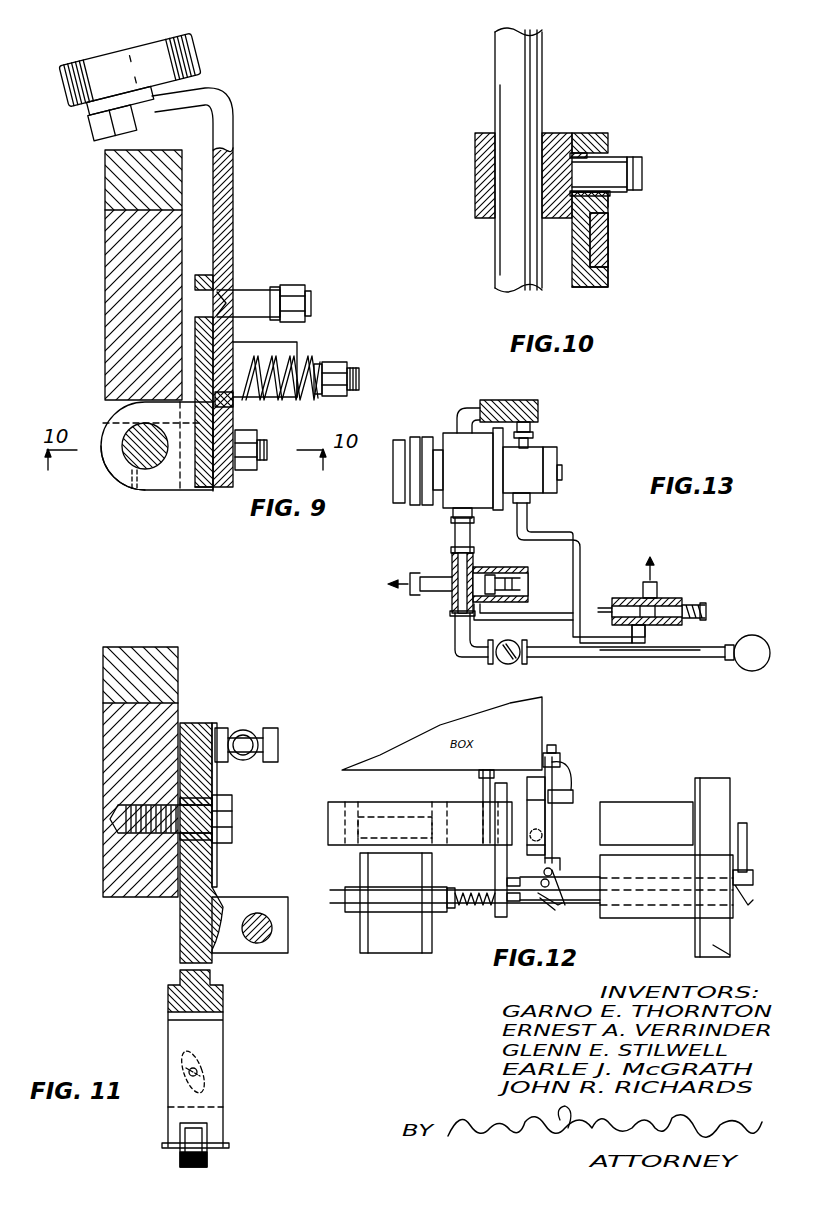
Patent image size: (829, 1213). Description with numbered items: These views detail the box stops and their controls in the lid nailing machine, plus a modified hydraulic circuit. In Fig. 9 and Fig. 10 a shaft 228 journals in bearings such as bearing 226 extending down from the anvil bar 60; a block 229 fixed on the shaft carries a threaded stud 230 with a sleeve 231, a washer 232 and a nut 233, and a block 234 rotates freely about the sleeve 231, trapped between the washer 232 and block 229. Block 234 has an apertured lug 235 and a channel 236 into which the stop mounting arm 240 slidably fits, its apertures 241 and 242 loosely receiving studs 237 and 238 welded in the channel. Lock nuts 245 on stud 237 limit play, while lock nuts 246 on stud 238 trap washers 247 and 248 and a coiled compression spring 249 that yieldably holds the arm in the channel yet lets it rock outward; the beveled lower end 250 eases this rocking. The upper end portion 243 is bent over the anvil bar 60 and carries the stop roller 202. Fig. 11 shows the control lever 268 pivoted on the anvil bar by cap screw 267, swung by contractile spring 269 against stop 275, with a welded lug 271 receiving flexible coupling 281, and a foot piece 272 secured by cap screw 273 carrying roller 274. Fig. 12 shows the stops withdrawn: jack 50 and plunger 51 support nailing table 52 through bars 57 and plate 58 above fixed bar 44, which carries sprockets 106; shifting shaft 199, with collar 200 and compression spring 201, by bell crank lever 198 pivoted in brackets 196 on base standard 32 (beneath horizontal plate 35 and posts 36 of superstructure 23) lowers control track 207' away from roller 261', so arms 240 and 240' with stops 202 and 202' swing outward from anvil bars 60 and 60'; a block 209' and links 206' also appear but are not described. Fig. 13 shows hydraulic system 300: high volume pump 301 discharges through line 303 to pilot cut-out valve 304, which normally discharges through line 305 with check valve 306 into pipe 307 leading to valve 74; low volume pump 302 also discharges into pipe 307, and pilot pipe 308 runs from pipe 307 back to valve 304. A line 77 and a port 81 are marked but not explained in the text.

In FIG. 9, the stop roller 202 is at (130, 58).
In FIG. 9, the upper end portion 243 is at (124, 121).
In FIG. 9, the stop mounting arm 240 is at (226, 287).
In FIG. 10, the stop mounting arm 240 is at (613, 239).
In FIG. 9, the anvil bar 60 is at (121, 275).
In FIG. 11, the anvil bar 60 is at (116, 772).
In FIG. 9, the channel 236 is at (217, 411).
In FIG. 10, the channel 236 is at (608, 241).
In FIG. 9, the aperture 241 is at (231, 290).
In FIG. 9, the lock nuts 245 is at (283, 287).
In FIG. 9, the stud 237 is at (308, 302).
In FIG. 9, the apertured lug 235 is at (290, 345).
In FIG. 9, the washer 247 is at (238, 357).
In FIG. 9, the washer 248 is at (312, 358).
In FIG. 9, the lock nuts 246 is at (320, 362).
In FIG. 9, the stud 238 is at (330, 378).
In FIG. 9, the aperture 242 is at (230, 397).
In FIG. 9, the coiled compression spring 249 is at (297, 397).
In FIG. 9, the block 229 is at (170, 490).
In FIG. 10, the block 229 is at (480, 170).
In FIG. 9, the bearing 226 is at (116, 492).
In FIG. 9, the shaft 228 is at (130, 459).
In FIG. 10, the shaft 228 is at (510, 70).
In FIG. 9, the nut 233 is at (248, 468).
In FIG. 10, the nut 233 is at (628, 195).
In FIG. 9, the threaded stud 230 is at (266, 455).
In FIG. 10, the threaded stud 230 is at (643, 170).
In FIG. 9, the beveled lower end 250 is at (213, 488).
In FIG. 9, the block 234 is at (207, 488).
In FIG. 10, the block 234 is at (609, 277).
In FIG. 10, the sleeve 231 is at (607, 143).
In FIG. 10, the washer 232 is at (609, 207).
In FIG. 13, the high volume pump 301 is at (455, 443).
In FIG. 13, the low volume pump 302 is at (534, 455).
In FIG. 13, the discharge line 303 is at (463, 535).
In FIG. 13, the pilot pressure control cut-out valve 304 is at (528, 575).
In FIG. 13, the hydraulic system 300 is at (566, 530).
In FIG. 13, the pilot pipe 308 is at (547, 620).
In FIG. 13, the line 305 is at (458, 635).
In FIG. 13, the check valve 306 is at (508, 663).
In FIG. 13, the pipe 307 is at (540, 652).
In FIG. 13, the line 77 is at (663, 651).
In FIG. 13, the jack 50 is at (760, 623).
In FIG. 12, the jack 50 is at (375, 928).
In FIG. 13, the valve 74 is at (683, 593).
In FIG. 13, the vent 81 is at (658, 588).
In FIG. 11, the control lever 268 is at (203, 987).
In FIG. 11, the stop 275 is at (218, 863).
In FIG. 11, the contractile spring 269 is at (247, 729).
In FIG. 11, the cap screw 267 is at (233, 818).
In FIG. 11, the lug 271 is at (265, 951).
In FIG. 11, the flexible coupling 281 is at (260, 913).
In FIG. 11, the foot piece 272 is at (217, 1112).
In FIG. 11, the cap screw 273 is at (203, 1068).
In FIG. 11, the roller 274 is at (193, 1150).
In FIG. 12, the nailing table 52 is at (338, 800).
In FIG. 12, the bars 57 is at (412, 817).
In FIG. 12, the plate 58 is at (395, 823).
In FIG. 12, the sprockets 106 is at (487, 792).
In FIG. 12, the fixed bar 44 is at (495, 857).
In FIG. 12, the plunger 51 is at (362, 857).
In FIG. 12, the shaft 199 is at (587, 904).
In FIG. 12, the collar 200 is at (454, 893).
In FIG. 12, the coiled compression spring 201 is at (467, 908).
In FIG. 12, the bracket 209' is at (531, 909).
In FIG. 12, the anvil bar 60' is at (520, 795).
In FIG. 12, the stop mounting arm 240' is at (593, 804).
In FIG. 12, the stop roller 202' is at (582, 743).
In FIG. 12, the roller 261' is at (601, 860).
In FIG. 12, the link 206' is at (565, 922).
In FIG. 12, the control track 207' is at (626, 879).
In FIG. 12, the horizontal plate 35 is at (662, 918).
In FIG. 12, the angle iron posts 36 is at (702, 780).
In FIG. 12, the frame superstructure 23 is at (717, 787).
In FIG. 12, the bell crank lever 198 is at (768, 800).
In FIG. 12, the brackets 196 is at (742, 875).
In FIG. 12, the base standard 32 is at (723, 943).